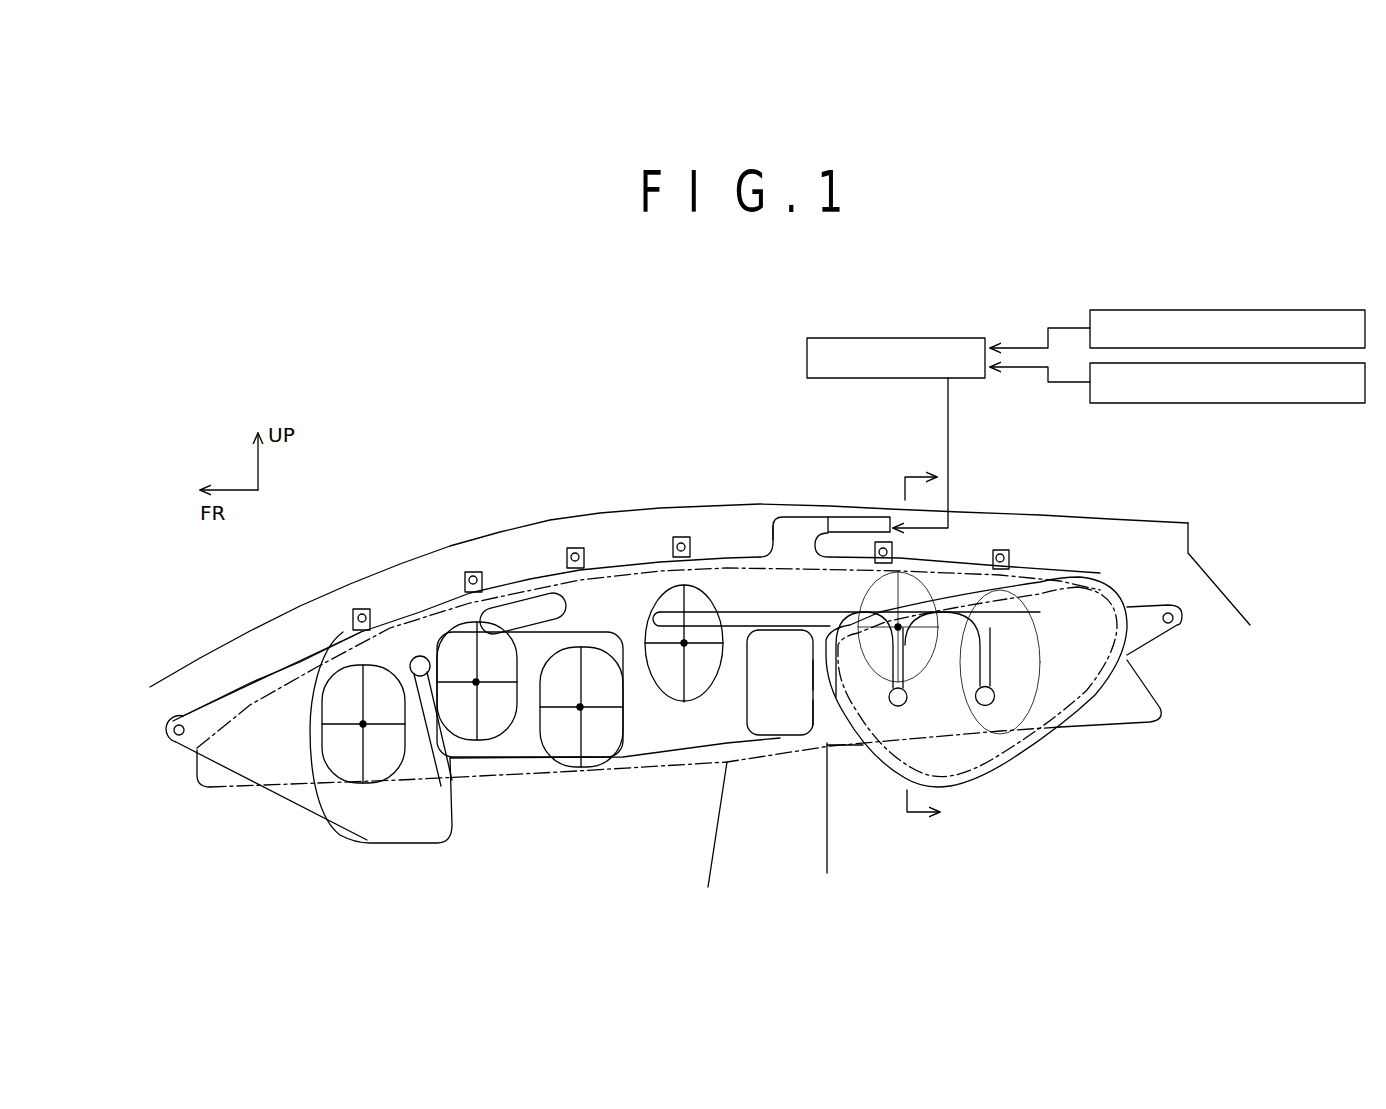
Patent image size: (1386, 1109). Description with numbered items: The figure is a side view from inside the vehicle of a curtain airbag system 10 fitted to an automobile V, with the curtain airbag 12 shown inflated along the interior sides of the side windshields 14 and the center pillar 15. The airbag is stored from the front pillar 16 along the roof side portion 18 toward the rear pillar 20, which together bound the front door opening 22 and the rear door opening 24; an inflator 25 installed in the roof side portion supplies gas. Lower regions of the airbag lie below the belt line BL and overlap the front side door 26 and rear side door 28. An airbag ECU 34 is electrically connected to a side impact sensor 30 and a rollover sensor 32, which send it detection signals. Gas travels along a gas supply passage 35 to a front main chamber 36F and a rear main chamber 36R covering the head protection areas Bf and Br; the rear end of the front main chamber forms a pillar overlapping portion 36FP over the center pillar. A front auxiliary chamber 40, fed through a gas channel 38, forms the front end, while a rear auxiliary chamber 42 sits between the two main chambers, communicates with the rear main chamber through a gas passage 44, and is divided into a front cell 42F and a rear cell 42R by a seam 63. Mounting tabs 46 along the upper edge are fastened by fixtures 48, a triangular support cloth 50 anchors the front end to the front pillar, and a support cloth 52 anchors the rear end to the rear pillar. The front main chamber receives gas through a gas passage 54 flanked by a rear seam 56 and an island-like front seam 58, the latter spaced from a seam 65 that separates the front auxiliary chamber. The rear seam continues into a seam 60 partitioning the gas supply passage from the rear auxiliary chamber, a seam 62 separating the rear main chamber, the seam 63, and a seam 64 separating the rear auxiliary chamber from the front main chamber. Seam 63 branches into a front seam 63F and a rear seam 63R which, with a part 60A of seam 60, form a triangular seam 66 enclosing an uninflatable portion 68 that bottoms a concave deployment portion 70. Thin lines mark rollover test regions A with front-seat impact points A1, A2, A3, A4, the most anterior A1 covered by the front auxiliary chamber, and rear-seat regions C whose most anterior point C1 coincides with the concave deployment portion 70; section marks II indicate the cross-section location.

The curtain airbag system 10 is at (363, 853).
The curtain airbag 12 is at (727, 550).
The side windshields 14 is at (195, 790).
The center pillar 15 is at (812, 823).
The front pillar 16 is at (205, 662).
The roof side portion 18 is at (768, 520).
The rear pillar 20 is at (1205, 585).
The front door opening 22 is at (433, 617).
The rear door opening 24 is at (1010, 540).
The inflator 25 is at (855, 517).
The front side door 26 is at (483, 770).
The rear side door 28 is at (1030, 800).
The side impact sensor 30 is at (1285, 310).
The rollover sensor 32 is at (1283, 405).
The airbag ECU 34 is at (903, 338).
The gas supply passage 35 is at (795, 555).
The front main chamber 36F is at (637, 775).
The rear main chamber 36R is at (1093, 575).
The pillar overlapping portion 36FP is at (748, 824).
The gas channel 38 is at (423, 627).
The front auxiliary chamber 40 is at (323, 827).
The rear auxiliary chamber 42 is at (1033, 902).
The front cell 42F is at (883, 790).
The rear cell 42R is at (950, 790).
The gas passage 44 is at (1003, 790).
The mounting tabs 46 is at (352, 622).
The fixtures 48 is at (356, 612).
The support cloth 50 is at (170, 740).
The support cloth 52 is at (1147, 633).
The gas passage 54 is at (642, 565).
The rear seam 56 is at (941, 551).
The front seam 58 is at (533, 617).
The seam 60 is at (1040, 612).
The part of the seam 60A is at (780, 682).
The seam 62 is at (940, 690).
The seam 63 is at (878, 715).
The front seam 63F is at (782, 712).
The rear seam 63R is at (782, 677).
The seam 64 is at (803, 740).
The seam 65 is at (427, 767).
The triangular seam 66 is at (683, 703).
The uninflatable portion 68 is at (575, 608).
The concave deployment portion 70 is at (928, 677).
The test points A is at (400, 677).
The impact point A1 is at (357, 720).
The impact point A2 is at (580, 745).
The impact point A3 is at (563, 707).
The impact point A4 is at (675, 659).
The test points C is at (935, 595).
The impact point C1 is at (890, 683).
The belt line BL is at (503, 773).
The head protection area Bf is at (547, 856).
The head protection area Br is at (1125, 590).
The automobile V is at (1185, 518).
The section line II is at (919, 649).